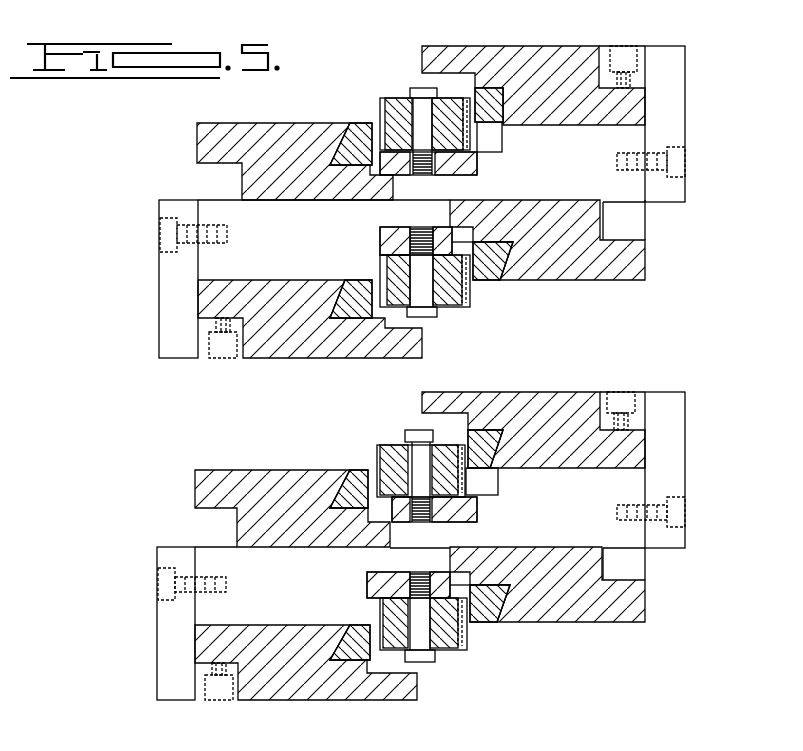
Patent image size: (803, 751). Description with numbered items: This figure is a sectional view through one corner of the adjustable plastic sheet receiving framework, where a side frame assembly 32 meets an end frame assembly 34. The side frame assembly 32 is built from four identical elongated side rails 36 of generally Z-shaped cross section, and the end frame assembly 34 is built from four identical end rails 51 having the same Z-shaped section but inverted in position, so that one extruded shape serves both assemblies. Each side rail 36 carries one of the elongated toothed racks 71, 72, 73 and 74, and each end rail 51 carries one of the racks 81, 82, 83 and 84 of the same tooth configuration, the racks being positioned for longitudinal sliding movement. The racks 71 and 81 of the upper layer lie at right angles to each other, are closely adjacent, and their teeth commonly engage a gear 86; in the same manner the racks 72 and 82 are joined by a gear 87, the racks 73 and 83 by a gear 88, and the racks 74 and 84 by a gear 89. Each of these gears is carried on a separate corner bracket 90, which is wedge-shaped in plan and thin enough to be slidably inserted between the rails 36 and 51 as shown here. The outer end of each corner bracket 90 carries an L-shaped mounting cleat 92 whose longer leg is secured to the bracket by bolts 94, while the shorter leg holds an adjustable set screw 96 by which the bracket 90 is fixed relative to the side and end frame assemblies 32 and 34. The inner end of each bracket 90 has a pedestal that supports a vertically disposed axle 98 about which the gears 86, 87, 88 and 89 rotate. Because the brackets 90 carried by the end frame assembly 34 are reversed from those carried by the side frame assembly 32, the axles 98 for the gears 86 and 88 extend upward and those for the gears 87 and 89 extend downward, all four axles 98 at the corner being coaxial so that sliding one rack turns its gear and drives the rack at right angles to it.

The side frame assembly 32 is at (573, 37).
The end frame assembly 34 is at (295, 114).
The side rail 36 is at (583, 46).
The end rail 51 is at (283, 197).
The toothed rack 71 is at (503, 122).
The toothed rack 72 is at (507, 257).
The toothed rack 73 is at (503, 440).
The toothed rack 74 is at (507, 598).
The toothed rack 81 is at (363, 88).
The toothed rack 82 is at (338, 290).
The toothed rack 83 is at (355, 478).
The toothed rack 84 is at (336, 638).
The gear 86 is at (400, 98).
The gear 87 is at (448, 302).
The gear 88 is at (401, 445).
The gear 89 is at (450, 648).
The corner bracket 90 is at (632, 188).
The L-shaped mounting cleat 92 is at (670, 103).
The bolt 94 is at (690, 160).
The adjustable set screw 96 is at (652, 56).
The axle 98 is at (422, 175).